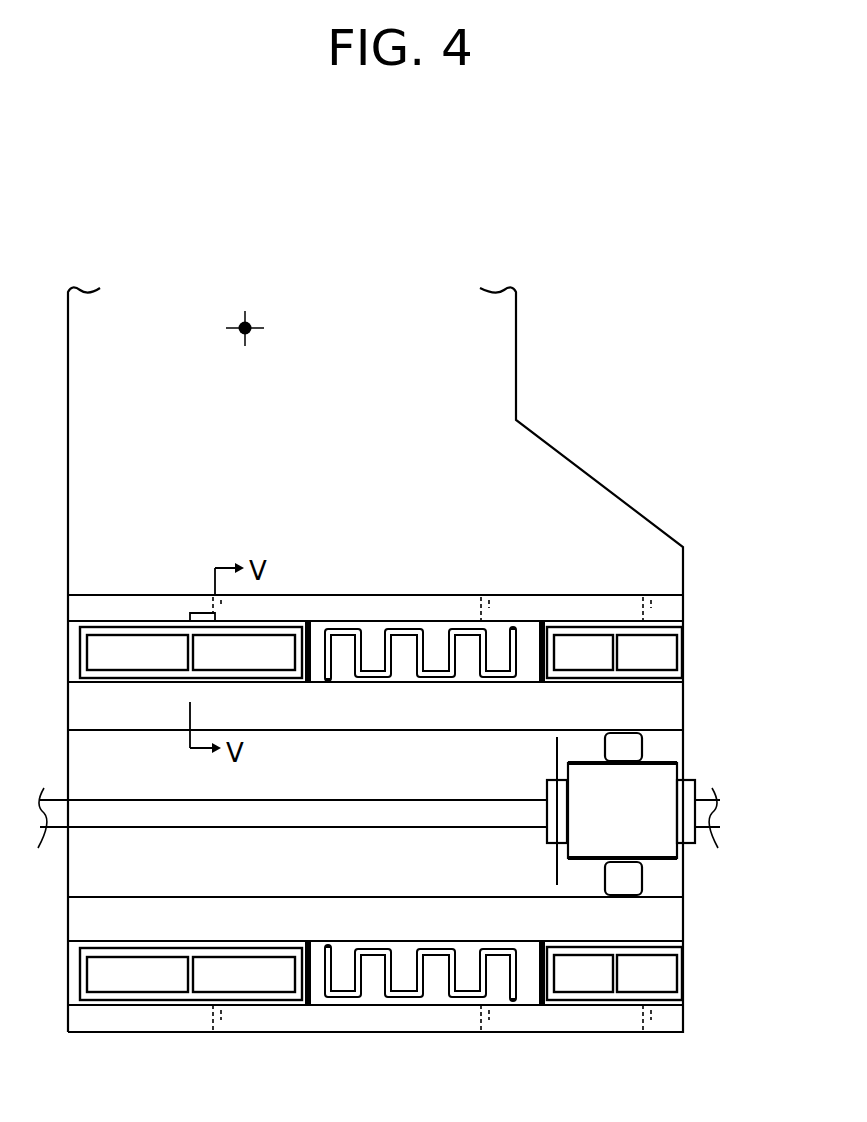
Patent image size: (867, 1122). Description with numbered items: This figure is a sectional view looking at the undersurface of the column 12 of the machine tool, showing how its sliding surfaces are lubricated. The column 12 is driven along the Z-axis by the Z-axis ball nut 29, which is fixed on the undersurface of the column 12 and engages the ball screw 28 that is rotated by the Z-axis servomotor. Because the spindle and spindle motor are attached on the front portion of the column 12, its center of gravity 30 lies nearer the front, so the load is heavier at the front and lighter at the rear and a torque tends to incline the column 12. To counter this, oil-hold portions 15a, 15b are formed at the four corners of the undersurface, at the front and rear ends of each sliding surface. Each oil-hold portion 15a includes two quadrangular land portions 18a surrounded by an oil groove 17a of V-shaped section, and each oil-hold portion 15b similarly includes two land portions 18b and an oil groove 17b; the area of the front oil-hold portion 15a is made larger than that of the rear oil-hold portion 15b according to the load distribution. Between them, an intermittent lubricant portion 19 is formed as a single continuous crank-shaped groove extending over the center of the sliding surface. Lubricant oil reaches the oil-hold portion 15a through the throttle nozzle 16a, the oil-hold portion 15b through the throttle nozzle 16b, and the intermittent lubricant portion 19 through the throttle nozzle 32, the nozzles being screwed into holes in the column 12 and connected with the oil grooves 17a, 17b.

The column 12 is at (455, 358).
The center of gravity 30 is at (250, 320).
The ball screw 28 is at (345, 820).
The Z-axis ball nut 29 is at (655, 777).
The oil-hold portion 15a is at (185, 683).
The oil-hold portion 15b is at (612, 678).
The throttle nozzle 16a is at (213, 598).
The throttle nozzle 16b is at (643, 597).
The oil groove 17a is at (273, 630).
The oil groove 17b is at (566, 630).
The land portion 18a is at (207, 653).
The land portion 18b is at (588, 652).
The intermittent lubricant portion 19 is at (405, 670).
The throttle nozzle 32 is at (481, 596).